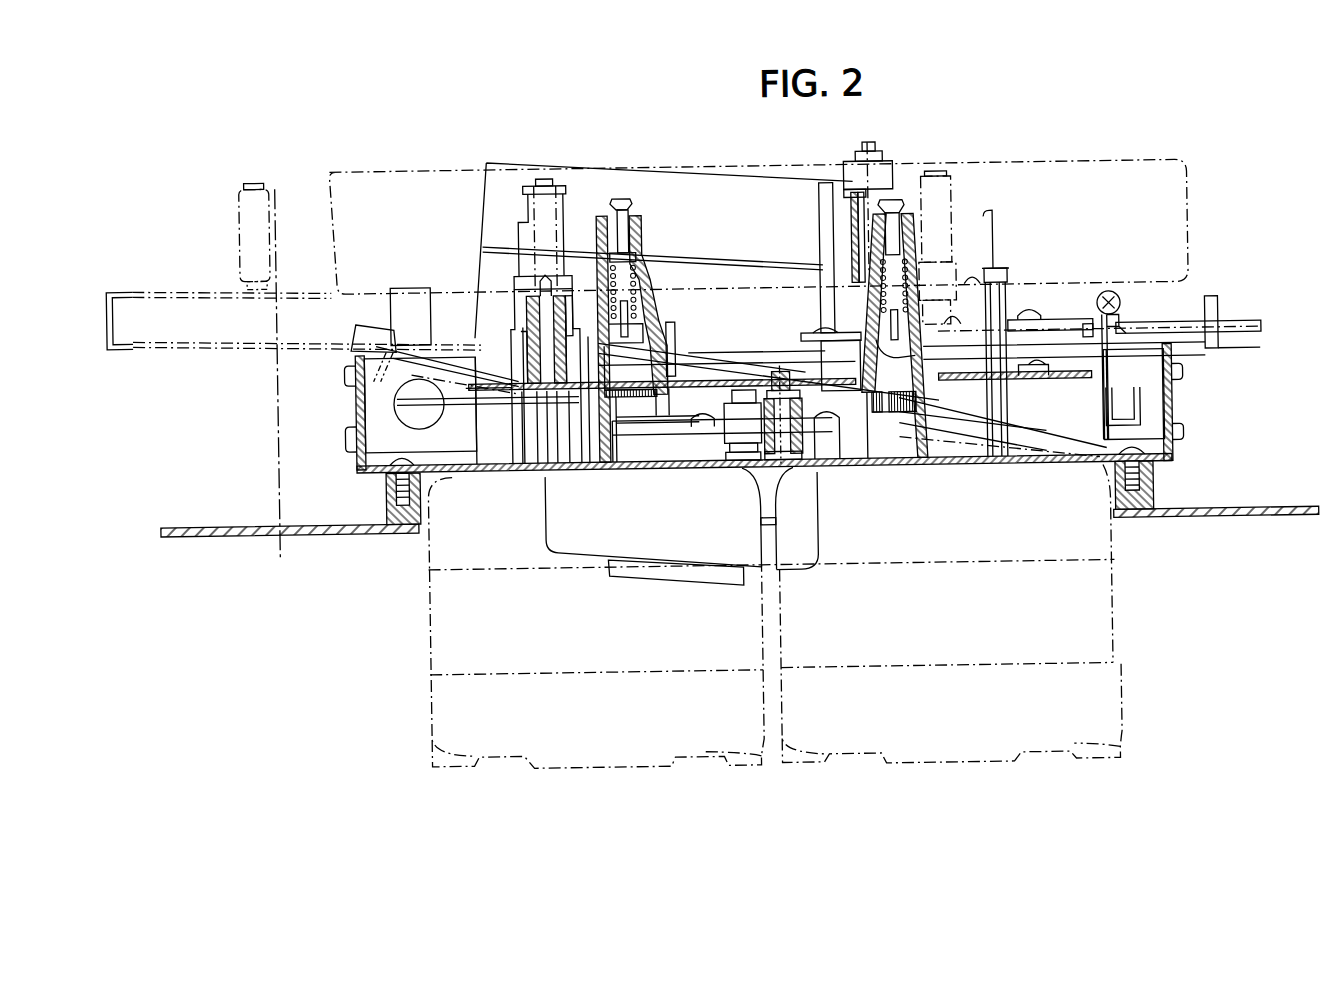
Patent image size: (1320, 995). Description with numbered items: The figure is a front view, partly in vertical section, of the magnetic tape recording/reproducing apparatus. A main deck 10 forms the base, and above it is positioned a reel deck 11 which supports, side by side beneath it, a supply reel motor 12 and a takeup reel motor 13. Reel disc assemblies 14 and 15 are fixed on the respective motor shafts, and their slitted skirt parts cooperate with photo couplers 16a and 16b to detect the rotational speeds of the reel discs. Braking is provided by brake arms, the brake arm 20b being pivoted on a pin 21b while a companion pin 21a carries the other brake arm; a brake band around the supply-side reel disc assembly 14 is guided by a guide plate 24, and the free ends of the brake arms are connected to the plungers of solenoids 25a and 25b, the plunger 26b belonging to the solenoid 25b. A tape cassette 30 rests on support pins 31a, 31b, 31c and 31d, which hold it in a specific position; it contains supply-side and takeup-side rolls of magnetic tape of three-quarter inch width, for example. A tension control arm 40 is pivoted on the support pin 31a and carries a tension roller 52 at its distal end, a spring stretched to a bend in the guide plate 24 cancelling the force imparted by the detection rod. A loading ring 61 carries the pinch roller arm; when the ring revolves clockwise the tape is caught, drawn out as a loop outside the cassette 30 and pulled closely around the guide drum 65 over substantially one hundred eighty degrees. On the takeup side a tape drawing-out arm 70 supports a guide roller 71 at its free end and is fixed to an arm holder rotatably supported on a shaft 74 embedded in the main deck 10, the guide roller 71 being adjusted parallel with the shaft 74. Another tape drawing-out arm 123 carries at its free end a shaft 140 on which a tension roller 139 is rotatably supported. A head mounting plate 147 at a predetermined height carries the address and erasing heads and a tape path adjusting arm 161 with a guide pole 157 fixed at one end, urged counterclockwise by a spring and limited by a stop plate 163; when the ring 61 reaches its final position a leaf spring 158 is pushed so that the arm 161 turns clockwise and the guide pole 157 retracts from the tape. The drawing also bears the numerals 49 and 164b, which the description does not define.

The main deck 10 is at (1232, 530).
The reel deck 11 is at (1178, 391).
The supply reel motor 12 is at (1111, 686).
The takeup reel motor 13 is at (428, 711).
The reel disc assembly 14 is at (999, 241).
The reel disc assembly 15 is at (656, 241).
The photo coupler 16a is at (828, 467).
The photo coupler 16b is at (662, 481).
The brake arm 20b is at (720, 395).
The pin 21a is at (741, 479).
The pin 21b is at (789, 479).
The guide plate 24 is at (701, 385).
The solenoid 25a is at (1178, 418).
The solenoid 25b is at (470, 442).
The plunger 26b is at (433, 431).
The tape cassette 30 is at (1196, 199).
The support pin 31a is at (533, 310).
The support pin 31b is at (991, 277).
The support pin 31c is at (528, 347).
The support pin 31d is at (1005, 306).
The tension control arm 40 is at (588, 290).
The rail 49 is at (241, 346).
The tension roller 52 is at (548, 224).
The loading ring 61 is at (381, 325).
The guide drum 65 is at (518, 164).
The tape drawing-out arm 70 is at (188, 289).
The guide roller 71 is at (276, 190).
The shaft 74 is at (276, 439).
The tape drawing-out arm 123 is at (1224, 320).
The tension roller 139 is at (952, 219).
The shaft 140 is at (912, 362).
The head mounting plate 147 is at (1241, 355).
The guide pole 157 is at (832, 192).
The leaf spring 158 is at (1105, 412).
The tape path adjusting arm 161 is at (1121, 336).
The stop plate 163 is at (1075, 330).
The arm 164b is at (1038, 321).